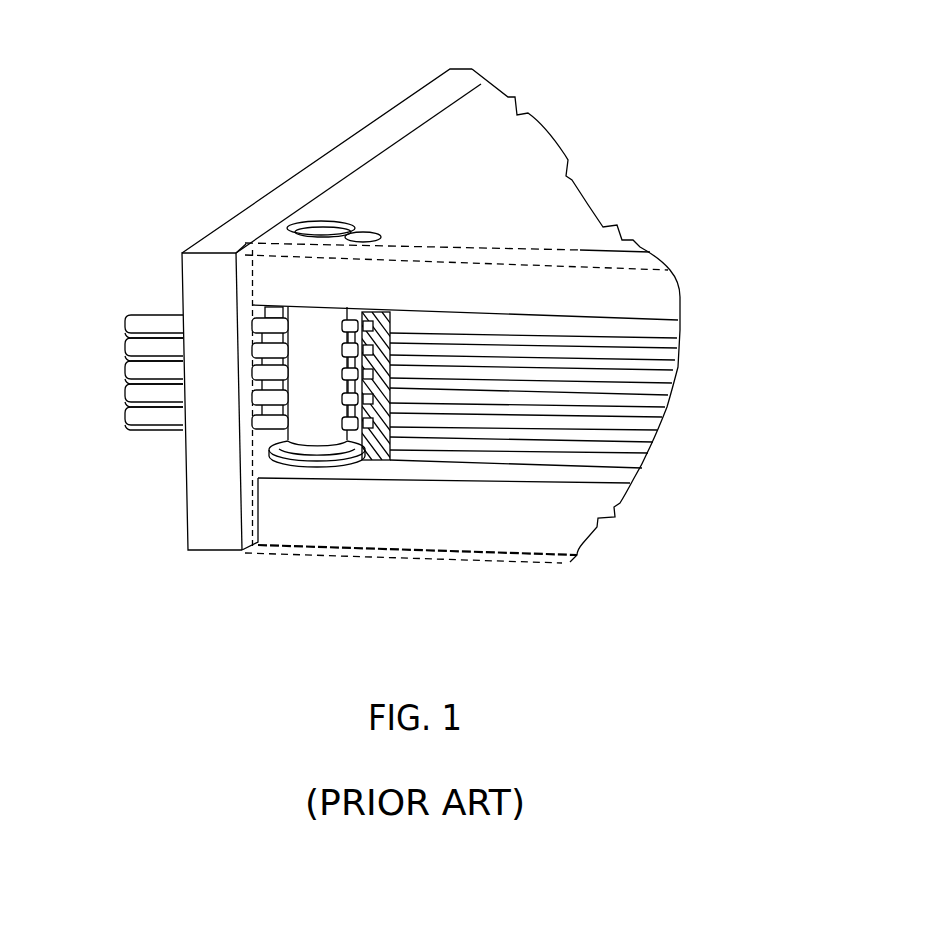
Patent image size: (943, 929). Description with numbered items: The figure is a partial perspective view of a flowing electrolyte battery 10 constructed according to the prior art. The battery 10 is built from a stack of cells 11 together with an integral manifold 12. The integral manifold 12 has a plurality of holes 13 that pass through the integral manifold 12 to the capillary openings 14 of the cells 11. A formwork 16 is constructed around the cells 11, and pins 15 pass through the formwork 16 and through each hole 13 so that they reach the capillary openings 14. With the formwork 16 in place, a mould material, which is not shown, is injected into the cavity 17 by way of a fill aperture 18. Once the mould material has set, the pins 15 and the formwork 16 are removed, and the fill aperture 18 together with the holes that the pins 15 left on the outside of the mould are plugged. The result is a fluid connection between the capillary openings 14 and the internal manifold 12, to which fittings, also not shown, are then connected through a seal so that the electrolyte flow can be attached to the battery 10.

The battery 10 is at (100, 87).
The cells 11 is at (666, 372).
The integral manifold 12 is at (300, 220).
The holes 13 is at (285, 379).
The capillary openings 14 is at (384, 359).
The pins 15 is at (128, 323).
The formwork 16 is at (215, 243).
The cavity 17 is at (250, 407).
The fill aperture 18 is at (364, 229).